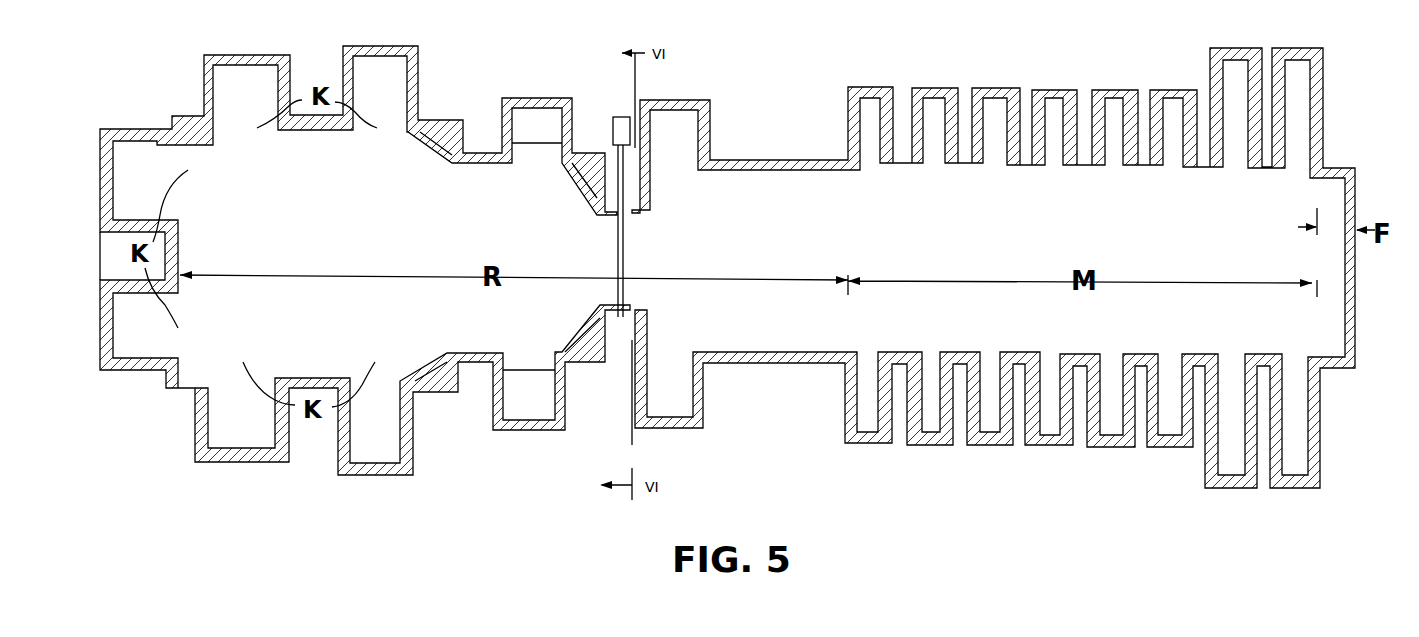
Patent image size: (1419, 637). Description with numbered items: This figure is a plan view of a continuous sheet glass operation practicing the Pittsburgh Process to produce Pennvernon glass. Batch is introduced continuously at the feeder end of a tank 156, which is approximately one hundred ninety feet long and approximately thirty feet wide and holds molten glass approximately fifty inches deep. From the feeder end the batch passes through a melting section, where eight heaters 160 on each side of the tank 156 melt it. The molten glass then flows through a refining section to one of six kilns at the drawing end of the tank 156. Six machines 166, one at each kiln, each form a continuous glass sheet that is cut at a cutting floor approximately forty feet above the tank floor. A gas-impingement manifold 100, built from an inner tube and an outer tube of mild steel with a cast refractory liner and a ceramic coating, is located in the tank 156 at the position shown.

The gas-impingement manifold 100 is at (625, 242).
The tank 156 is at (993, 268).
The heaters 160 is at (1118, 165).
The machines 166 is at (350, 62).